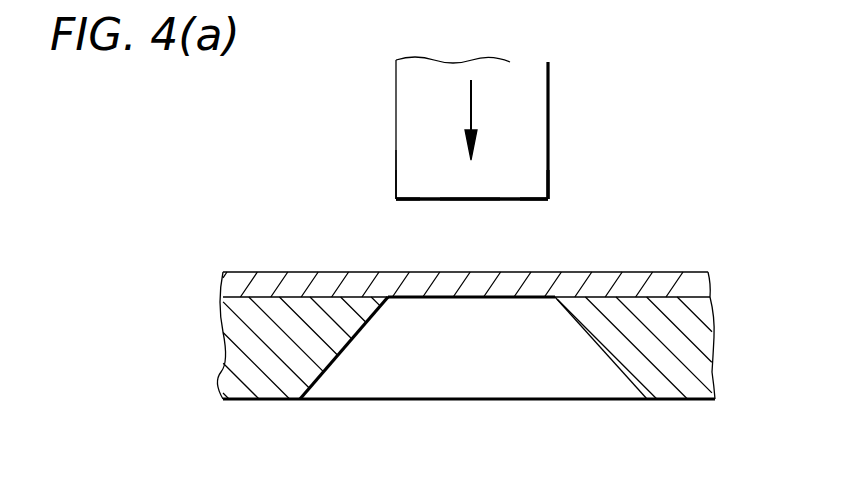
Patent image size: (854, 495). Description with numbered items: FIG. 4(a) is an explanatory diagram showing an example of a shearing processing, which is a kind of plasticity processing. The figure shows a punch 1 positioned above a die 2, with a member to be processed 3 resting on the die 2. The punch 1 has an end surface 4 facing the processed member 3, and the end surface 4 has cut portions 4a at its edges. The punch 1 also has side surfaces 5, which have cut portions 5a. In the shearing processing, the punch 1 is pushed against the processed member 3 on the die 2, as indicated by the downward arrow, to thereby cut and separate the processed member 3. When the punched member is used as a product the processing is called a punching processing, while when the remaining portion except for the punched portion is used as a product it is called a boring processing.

The punch 1 is at (540, 74).
The die 2 is at (693, 332).
The member to be processed 3 is at (690, 272).
The end surface of the punch 4 is at (470, 201).
The cut portions of the end surface 4a is at (400, 201).
The side surfaces of the punch 5 is at (396, 61).
The cut portions of the side surfaces 5a is at (396, 184).